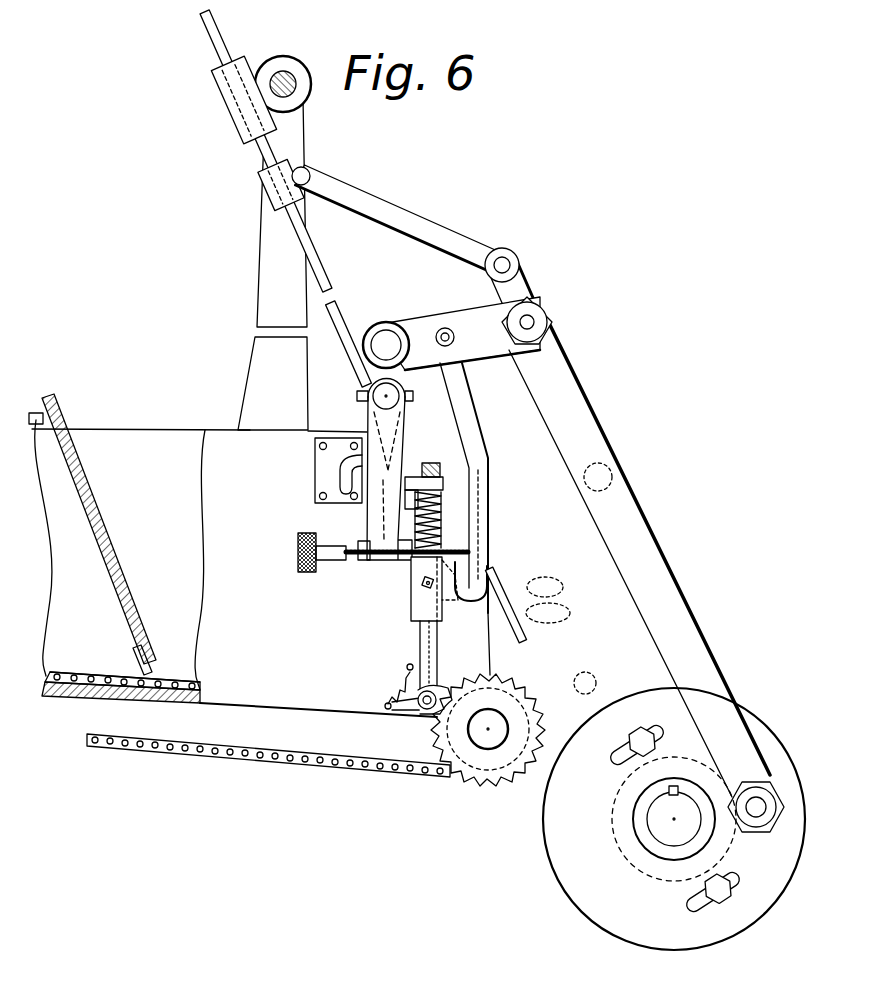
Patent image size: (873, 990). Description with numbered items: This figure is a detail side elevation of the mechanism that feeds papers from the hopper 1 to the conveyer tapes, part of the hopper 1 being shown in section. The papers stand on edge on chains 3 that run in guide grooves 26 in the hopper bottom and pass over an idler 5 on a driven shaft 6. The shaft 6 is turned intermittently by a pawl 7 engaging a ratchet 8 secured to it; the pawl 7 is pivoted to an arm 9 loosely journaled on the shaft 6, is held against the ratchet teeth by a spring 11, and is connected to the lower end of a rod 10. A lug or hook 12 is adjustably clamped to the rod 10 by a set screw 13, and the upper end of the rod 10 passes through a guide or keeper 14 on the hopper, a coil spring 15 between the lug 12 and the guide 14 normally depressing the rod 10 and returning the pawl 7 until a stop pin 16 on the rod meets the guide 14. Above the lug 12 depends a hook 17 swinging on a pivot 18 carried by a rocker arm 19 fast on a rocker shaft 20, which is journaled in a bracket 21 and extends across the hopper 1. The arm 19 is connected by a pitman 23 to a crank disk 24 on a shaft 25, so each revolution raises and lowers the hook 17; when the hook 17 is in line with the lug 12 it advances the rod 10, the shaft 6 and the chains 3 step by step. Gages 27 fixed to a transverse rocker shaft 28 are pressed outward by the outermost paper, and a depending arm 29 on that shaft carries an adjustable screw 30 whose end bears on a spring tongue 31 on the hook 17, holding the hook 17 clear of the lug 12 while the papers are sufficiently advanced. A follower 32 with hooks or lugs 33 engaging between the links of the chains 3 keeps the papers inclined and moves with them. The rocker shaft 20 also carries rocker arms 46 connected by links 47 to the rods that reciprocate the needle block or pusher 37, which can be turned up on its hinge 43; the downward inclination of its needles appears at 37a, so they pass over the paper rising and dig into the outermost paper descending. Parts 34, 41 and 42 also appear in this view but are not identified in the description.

The hopper 1 is at (238, 445).
The chains 3 is at (100, 692).
The idler 5 is at (242, 752).
The driven shaft 6 is at (496, 752).
The pawl 7 is at (440, 694).
The ratchet 8 is at (505, 698).
The arm 9 is at (510, 713).
The rod 10 is at (421, 640).
The spring 11 is at (408, 680).
The lug or hook 12 is at (490, 568).
The set screw 13 is at (422, 584).
The guide or keeper 14 is at (444, 480).
The coil spring 15 is at (445, 515).
The stop pin 16 is at (440, 462).
The hook 17 is at (492, 585).
The pivot 18 is at (453, 336).
The rocker arm 19 is at (470, 250).
The rocker shaft 20 is at (388, 342).
The bracket 21 is at (338, 463).
The pitman 23 is at (587, 422).
The crank disk 24 is at (577, 872).
The shaft 25 is at (656, 820).
The guide grooves 26 is at (72, 675).
The gages 27 is at (522, 642).
The transverse rocker shaft 28 is at (374, 397).
The depending arm 29 is at (383, 505).
The adjustable screw 30 is at (342, 558).
The spring tongue 31 is at (465, 540).
The follower 32 is at (122, 578).
The hooks or lugs 33 is at (135, 656).
The bracket 34 is at (40, 410).
The pusher 37 is at (545, 587).
The downward inclination of the needles 37a is at (548, 613).
The clamp block 41 is at (243, 116).
The hub eye 42 is at (374, 123).
The hinge 43 is at (270, 187).
The rocker arms 46 is at (442, 298).
The links 47 is at (390, 212).